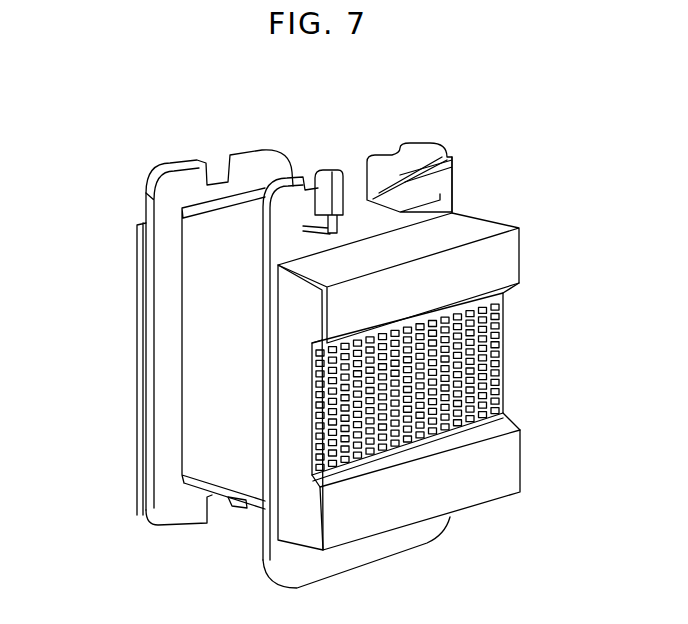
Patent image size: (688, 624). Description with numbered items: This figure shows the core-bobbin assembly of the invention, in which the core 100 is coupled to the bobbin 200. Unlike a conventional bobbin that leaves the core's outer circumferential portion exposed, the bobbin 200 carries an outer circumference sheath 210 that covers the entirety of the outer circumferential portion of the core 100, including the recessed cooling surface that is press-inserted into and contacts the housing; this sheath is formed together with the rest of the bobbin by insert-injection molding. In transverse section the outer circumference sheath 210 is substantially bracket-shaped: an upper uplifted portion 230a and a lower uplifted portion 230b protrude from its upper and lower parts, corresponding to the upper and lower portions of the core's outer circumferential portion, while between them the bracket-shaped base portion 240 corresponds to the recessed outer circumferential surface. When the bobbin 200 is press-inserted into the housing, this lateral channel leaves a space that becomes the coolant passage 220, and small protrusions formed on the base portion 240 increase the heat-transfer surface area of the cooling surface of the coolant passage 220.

The core 100 is at (220, 323).
The bobbin 200 is at (355, 223).
The outer circumference sheath 210 is at (455, 242).
The coolant passage 220 is at (512, 293).
The upper uplifted portion 230a is at (495, 267).
The lower uplifted portion 230b is at (470, 485).
The base portion 240 is at (312, 455).